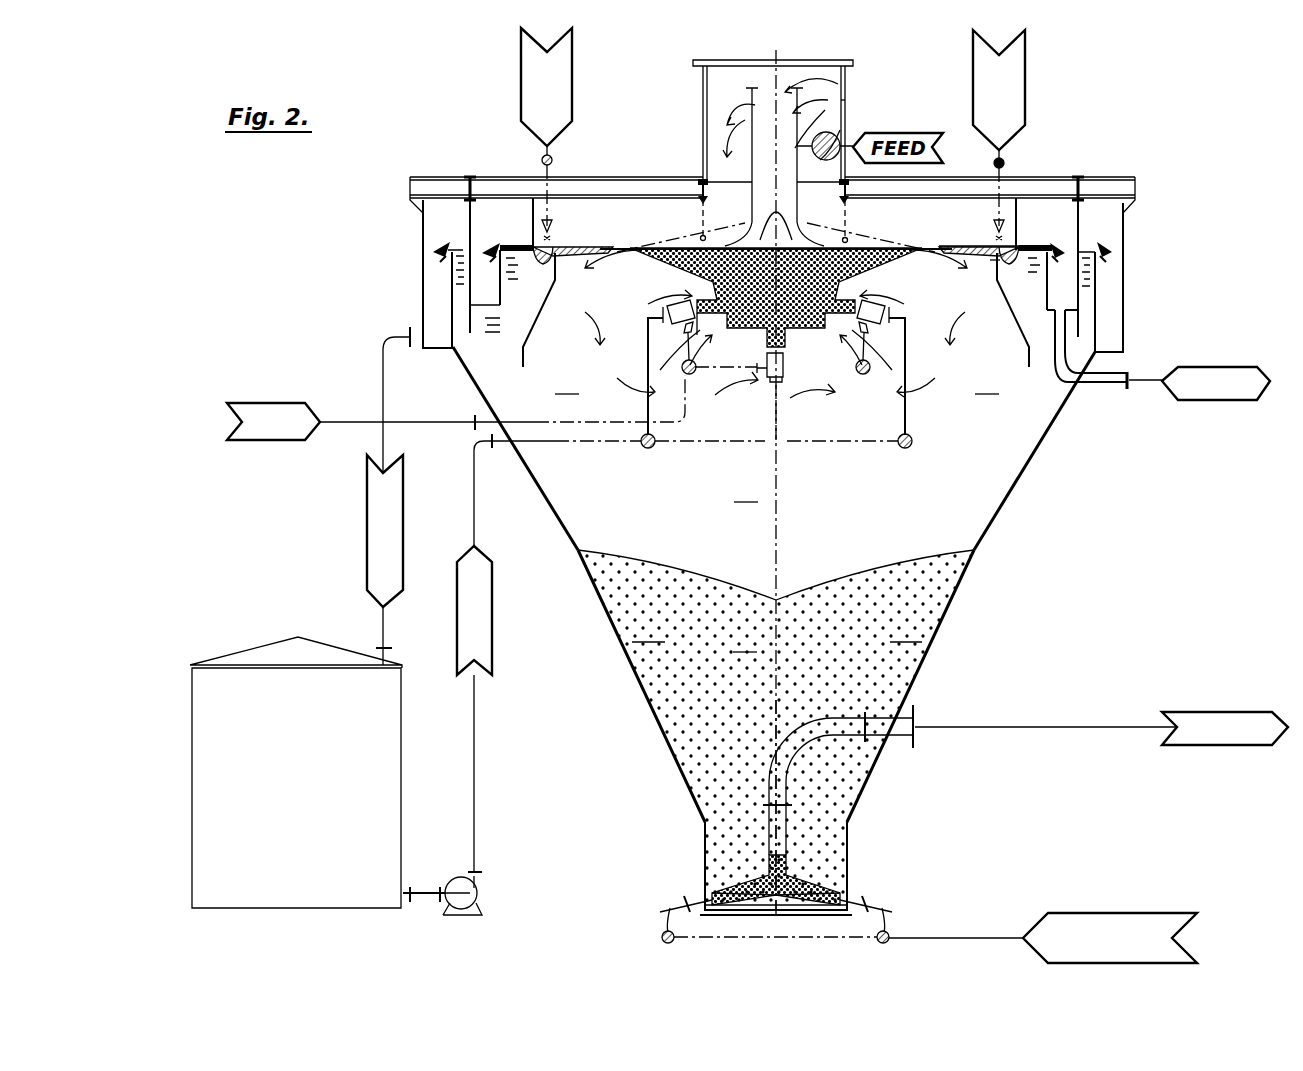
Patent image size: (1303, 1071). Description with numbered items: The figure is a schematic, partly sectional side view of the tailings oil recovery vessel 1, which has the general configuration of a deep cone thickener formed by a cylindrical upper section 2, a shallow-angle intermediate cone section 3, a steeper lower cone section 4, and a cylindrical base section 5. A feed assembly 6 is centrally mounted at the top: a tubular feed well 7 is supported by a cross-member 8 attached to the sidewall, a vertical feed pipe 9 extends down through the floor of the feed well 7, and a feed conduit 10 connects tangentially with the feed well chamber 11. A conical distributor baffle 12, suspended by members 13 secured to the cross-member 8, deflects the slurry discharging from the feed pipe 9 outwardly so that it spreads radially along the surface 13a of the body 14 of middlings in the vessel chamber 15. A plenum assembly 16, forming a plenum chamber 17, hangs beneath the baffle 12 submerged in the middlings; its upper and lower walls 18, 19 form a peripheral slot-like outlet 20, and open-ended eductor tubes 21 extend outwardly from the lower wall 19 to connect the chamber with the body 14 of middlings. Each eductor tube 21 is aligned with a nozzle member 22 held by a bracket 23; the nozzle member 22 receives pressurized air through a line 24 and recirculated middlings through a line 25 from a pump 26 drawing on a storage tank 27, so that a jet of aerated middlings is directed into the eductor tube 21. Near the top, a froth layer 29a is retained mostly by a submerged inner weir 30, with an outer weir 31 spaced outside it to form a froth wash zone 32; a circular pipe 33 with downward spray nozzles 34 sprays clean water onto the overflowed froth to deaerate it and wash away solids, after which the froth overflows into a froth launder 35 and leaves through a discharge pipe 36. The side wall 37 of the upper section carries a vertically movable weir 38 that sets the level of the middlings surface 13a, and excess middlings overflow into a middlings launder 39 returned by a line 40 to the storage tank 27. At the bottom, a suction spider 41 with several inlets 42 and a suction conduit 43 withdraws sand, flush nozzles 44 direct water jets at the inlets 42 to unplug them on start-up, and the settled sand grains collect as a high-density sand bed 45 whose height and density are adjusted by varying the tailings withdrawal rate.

The tailings oil recovery vessel 1 is at (596, 610).
The cylindrical upper section 2 is at (453, 287).
The intermediate cone section 3 is at (558, 520).
The lower cone section 4 is at (670, 734).
The cylindrical base section 5 is at (706, 862).
The feed assembly 6 is at (744, 58).
The feed well 7 is at (703, 103).
The cross-member 8 is at (703, 183).
The feed pipe 9 is at (752, 170).
The feed conduit 10 is at (840, 135).
The feed well chamber 11 is at (841, 92).
The conical distributor baffle 12 is at (843, 238).
The members 13 is at (703, 222).
The surface of the body of middlings 13a is at (985, 266).
The body of middlings 14 is at (778, 354).
The vessel chamber 15 is at (747, 491).
The plenum assembly 16 is at (744, 322).
The plenum chamber 17 is at (698, 326).
The upper wall 18 is at (764, 268).
The lower wall 19 is at (672, 270).
The slot-like outlet 20 is at (880, 270).
The eductor tubes 21 is at (852, 330).
The nozzle member 22 is at (762, 390).
The bracket 23 is at (785, 340).
The air line 24 is at (445, 423).
The middlings line 25 is at (474, 497).
The pump 26 is at (478, 888).
The storage tank 27 is at (403, 782).
The froth layer 29a is at (978, 248).
The inner weir 30 is at (558, 284).
The outer weir 31 is at (533, 222).
The froth wash zone 32 is at (552, 251).
The circular pipe 33 is at (553, 158).
The spray nozzles 34 is at (550, 226).
The froth launder 35 is at (500, 290).
The discharge pipe 36 is at (1100, 385).
The side wall 37 is at (1082, 330).
The vertically movable weir 38 is at (1088, 285).
The middlings launder 39 is at (437, 303).
The line 40 is at (375, 390).
The suction spider 41 is at (790, 830).
The inlets 42 is at (800, 880).
The suction conduit 43 is at (900, 730).
The flush nozzles 44 is at (845, 903).
The sand bed 45 is at (776, 727).